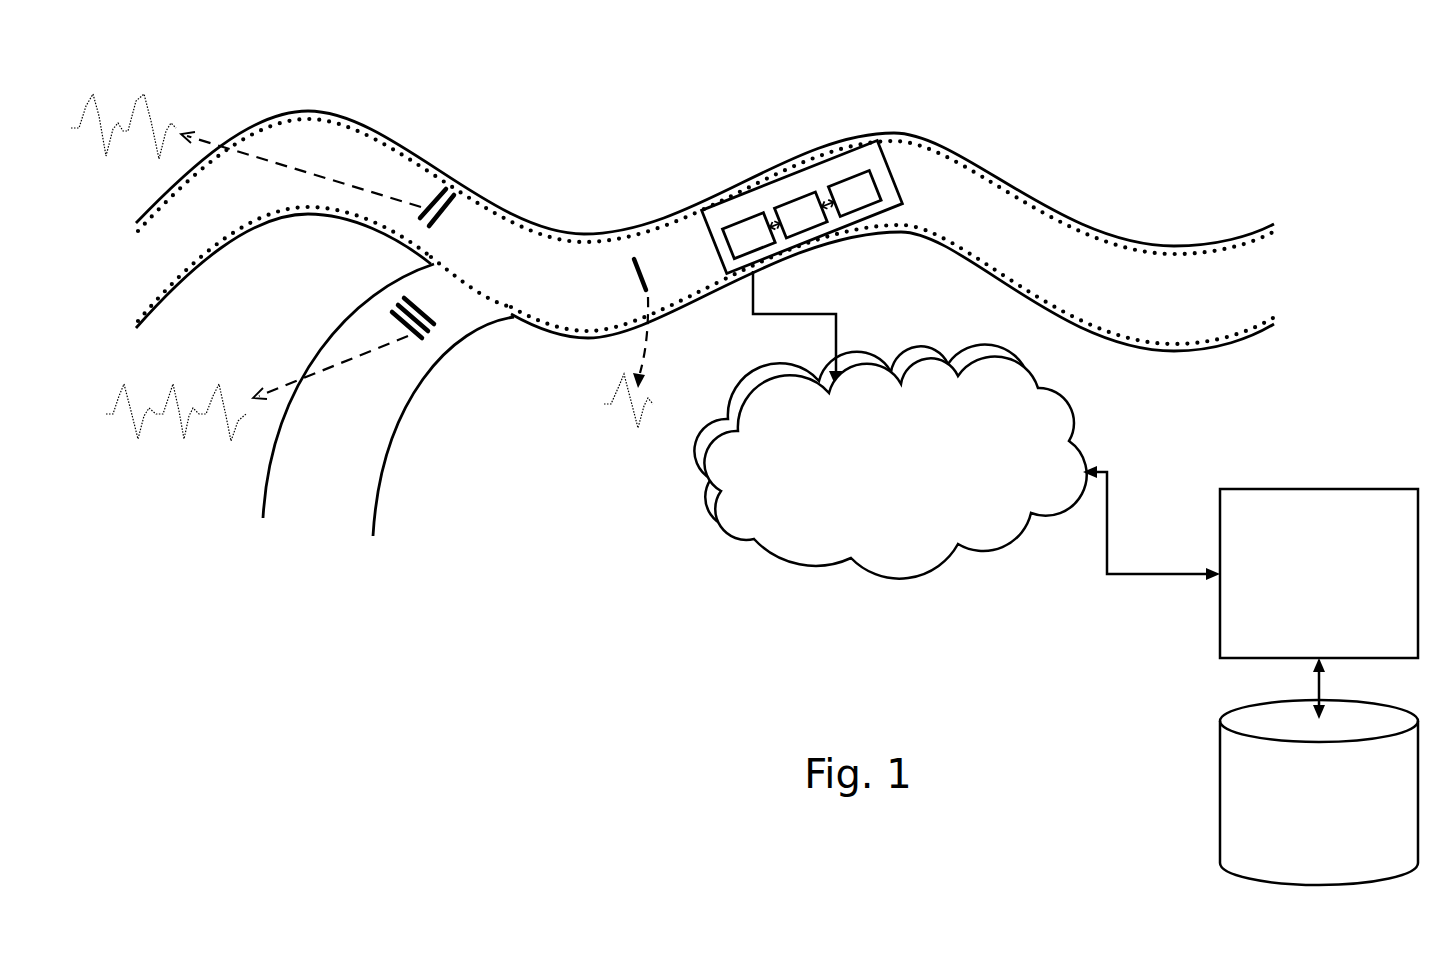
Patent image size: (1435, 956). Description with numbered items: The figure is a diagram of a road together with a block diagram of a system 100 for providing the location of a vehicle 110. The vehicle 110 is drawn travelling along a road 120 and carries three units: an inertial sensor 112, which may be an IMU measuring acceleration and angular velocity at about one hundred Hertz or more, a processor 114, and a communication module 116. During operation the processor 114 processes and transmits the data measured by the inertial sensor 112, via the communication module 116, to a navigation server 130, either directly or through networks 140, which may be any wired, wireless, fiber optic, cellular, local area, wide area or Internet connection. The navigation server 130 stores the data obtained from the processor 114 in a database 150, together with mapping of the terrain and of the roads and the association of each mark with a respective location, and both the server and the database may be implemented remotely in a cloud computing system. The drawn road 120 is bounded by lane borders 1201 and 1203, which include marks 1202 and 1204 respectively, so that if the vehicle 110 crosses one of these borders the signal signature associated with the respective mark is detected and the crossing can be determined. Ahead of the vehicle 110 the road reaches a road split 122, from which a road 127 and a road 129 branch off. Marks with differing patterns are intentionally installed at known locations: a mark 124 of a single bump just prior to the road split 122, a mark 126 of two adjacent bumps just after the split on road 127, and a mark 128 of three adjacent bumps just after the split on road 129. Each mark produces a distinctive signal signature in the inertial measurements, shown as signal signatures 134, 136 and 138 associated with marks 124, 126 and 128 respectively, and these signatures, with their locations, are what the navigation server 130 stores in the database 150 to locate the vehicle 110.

The system 100 is at (644, 608).
The vehicle 110 is at (848, 168).
The inertial sensor 112 is at (863, 187).
The processor 114 is at (798, 215).
The communication module 116 is at (745, 237).
The road 120 is at (993, 208).
The lane border 1201 is at (1107, 233).
The mark 1202 is at (1202, 247).
The lane border 1203 is at (1190, 350).
The mark 1204 is at (1075, 322).
The road split 122 is at (497, 275).
The mark 124 is at (635, 278).
The mark 126 is at (455, 182).
The road 127 is at (372, 155).
The mark 128 is at (397, 305).
The road 129 is at (355, 453).
The navigation server 130 is at (1297, 610).
The signal signature 134 is at (622, 407).
The signal signature 136 is at (120, 147).
The signal signature 138 is at (195, 440).
The networks 140 is at (872, 485).
The database 150 is at (1297, 831).